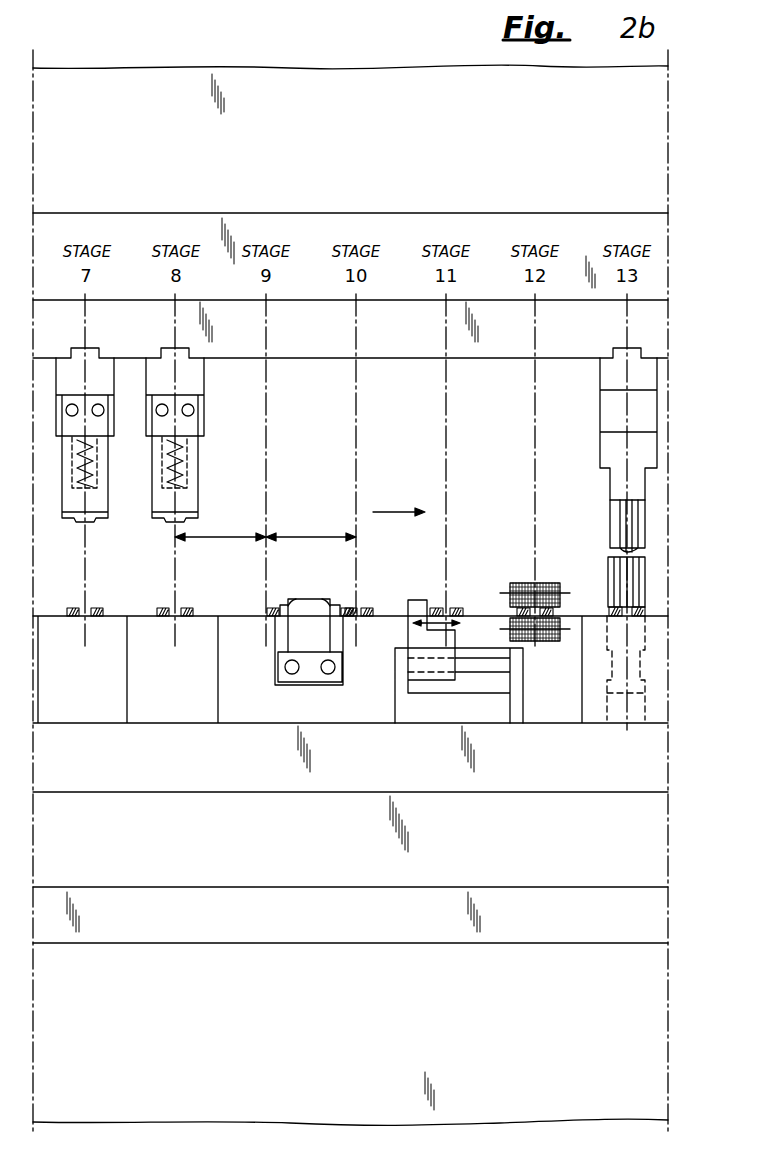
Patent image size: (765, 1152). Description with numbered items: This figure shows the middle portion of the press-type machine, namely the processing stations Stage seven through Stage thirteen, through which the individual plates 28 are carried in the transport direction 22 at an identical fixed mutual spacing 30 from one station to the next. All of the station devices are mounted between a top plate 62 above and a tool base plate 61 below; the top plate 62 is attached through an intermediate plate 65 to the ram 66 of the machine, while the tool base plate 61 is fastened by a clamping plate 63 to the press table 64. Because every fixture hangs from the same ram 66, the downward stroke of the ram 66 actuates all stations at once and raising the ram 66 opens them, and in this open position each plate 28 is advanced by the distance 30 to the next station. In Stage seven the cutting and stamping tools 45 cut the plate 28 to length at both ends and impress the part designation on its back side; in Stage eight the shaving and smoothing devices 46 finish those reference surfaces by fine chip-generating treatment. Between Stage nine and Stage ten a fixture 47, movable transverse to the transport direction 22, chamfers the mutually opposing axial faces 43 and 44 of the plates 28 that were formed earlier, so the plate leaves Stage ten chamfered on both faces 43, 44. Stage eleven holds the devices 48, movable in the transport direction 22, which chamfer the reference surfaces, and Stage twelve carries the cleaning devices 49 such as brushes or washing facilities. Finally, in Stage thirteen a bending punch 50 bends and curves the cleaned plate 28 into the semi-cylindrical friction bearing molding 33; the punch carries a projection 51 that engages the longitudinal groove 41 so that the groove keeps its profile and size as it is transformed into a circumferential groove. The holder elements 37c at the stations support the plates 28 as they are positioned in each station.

The ram 66 is at (294, 76).
The intermediate plate 65 is at (315, 222).
The top plate 62 is at (322, 348).
The tool base plate 61 is at (250, 780).
The clamping plate 63 is at (295, 876).
The press table 64 is at (340, 933).
The transport direction 22 is at (403, 511).
The mutual spacing 30 is at (265, 528).
The plate 28 is at (94, 620).
The workpiece holder 37c is at (88, 608).
The axial face 43 is at (292, 598).
The axial face 44 is at (325, 598).
The cutting and stamping tools 45 is at (98, 476).
The shaving and smoothing devices 46 is at (184, 470).
The chamfering fixture 47 is at (313, 642).
The chamfering devices 48 is at (416, 652).
The cleaning devices 49 is at (547, 582).
The bending punch 50 is at (610, 450).
The projection 51 is at (625, 545).
The groove 41 is at (612, 578).
The semi-cylindrical friction bearing molding 33 is at (646, 612).